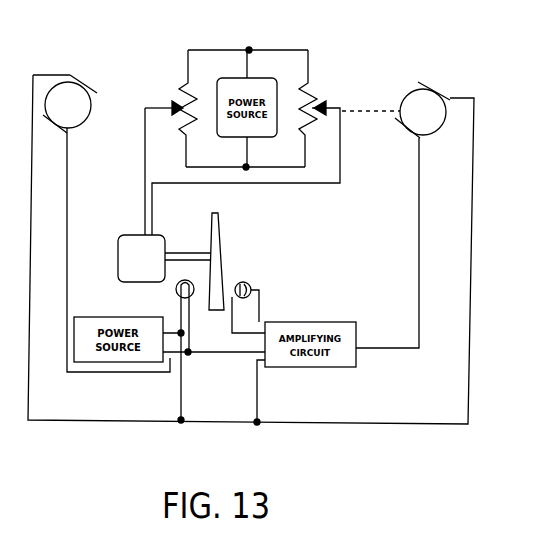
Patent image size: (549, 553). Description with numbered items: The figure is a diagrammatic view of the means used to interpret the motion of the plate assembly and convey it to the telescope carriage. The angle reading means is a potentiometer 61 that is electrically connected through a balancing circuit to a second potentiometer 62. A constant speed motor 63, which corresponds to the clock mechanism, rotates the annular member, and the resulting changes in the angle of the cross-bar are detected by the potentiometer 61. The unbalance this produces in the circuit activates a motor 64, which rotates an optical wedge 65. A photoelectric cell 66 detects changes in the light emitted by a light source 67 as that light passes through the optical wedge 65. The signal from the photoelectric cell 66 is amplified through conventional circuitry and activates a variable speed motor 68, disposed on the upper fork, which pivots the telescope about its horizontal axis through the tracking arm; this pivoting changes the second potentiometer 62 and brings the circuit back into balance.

The potentiometer 61 is at (173, 92).
The second potentiometer 62 is at (322, 92).
The constant speed motor 63 is at (75, 73).
The motor 64 is at (135, 247).
The optical wedge 65 is at (227, 253).
The photoelectric cell 66 is at (253, 284).
The light source 67 is at (175, 293).
The variable speed motor 68 is at (440, 90).